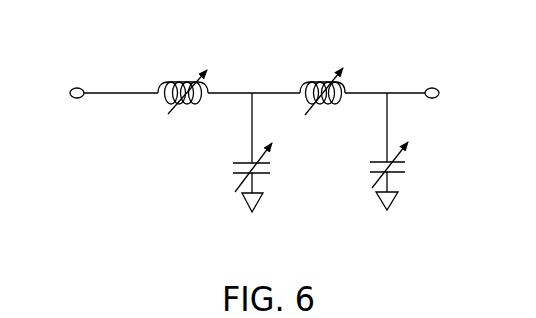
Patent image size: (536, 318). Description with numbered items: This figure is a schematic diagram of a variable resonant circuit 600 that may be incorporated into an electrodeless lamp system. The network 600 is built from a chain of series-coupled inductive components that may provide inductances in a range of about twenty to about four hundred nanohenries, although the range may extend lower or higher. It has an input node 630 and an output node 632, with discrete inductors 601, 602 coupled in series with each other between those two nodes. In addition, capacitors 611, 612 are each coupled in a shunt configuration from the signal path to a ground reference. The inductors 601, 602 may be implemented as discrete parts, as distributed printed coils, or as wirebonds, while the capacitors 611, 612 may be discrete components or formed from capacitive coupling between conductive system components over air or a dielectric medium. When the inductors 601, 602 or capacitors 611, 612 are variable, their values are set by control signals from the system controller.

The variable resonant circuit 600 is at (130, 65).
The discrete inductor 601 is at (185, 88).
The discrete inductor 602 is at (327, 85).
The capacitor 611 is at (247, 160).
The capacitor 612 is at (380, 161).
The input node 630 is at (73, 106).
The output node 632 is at (434, 102).